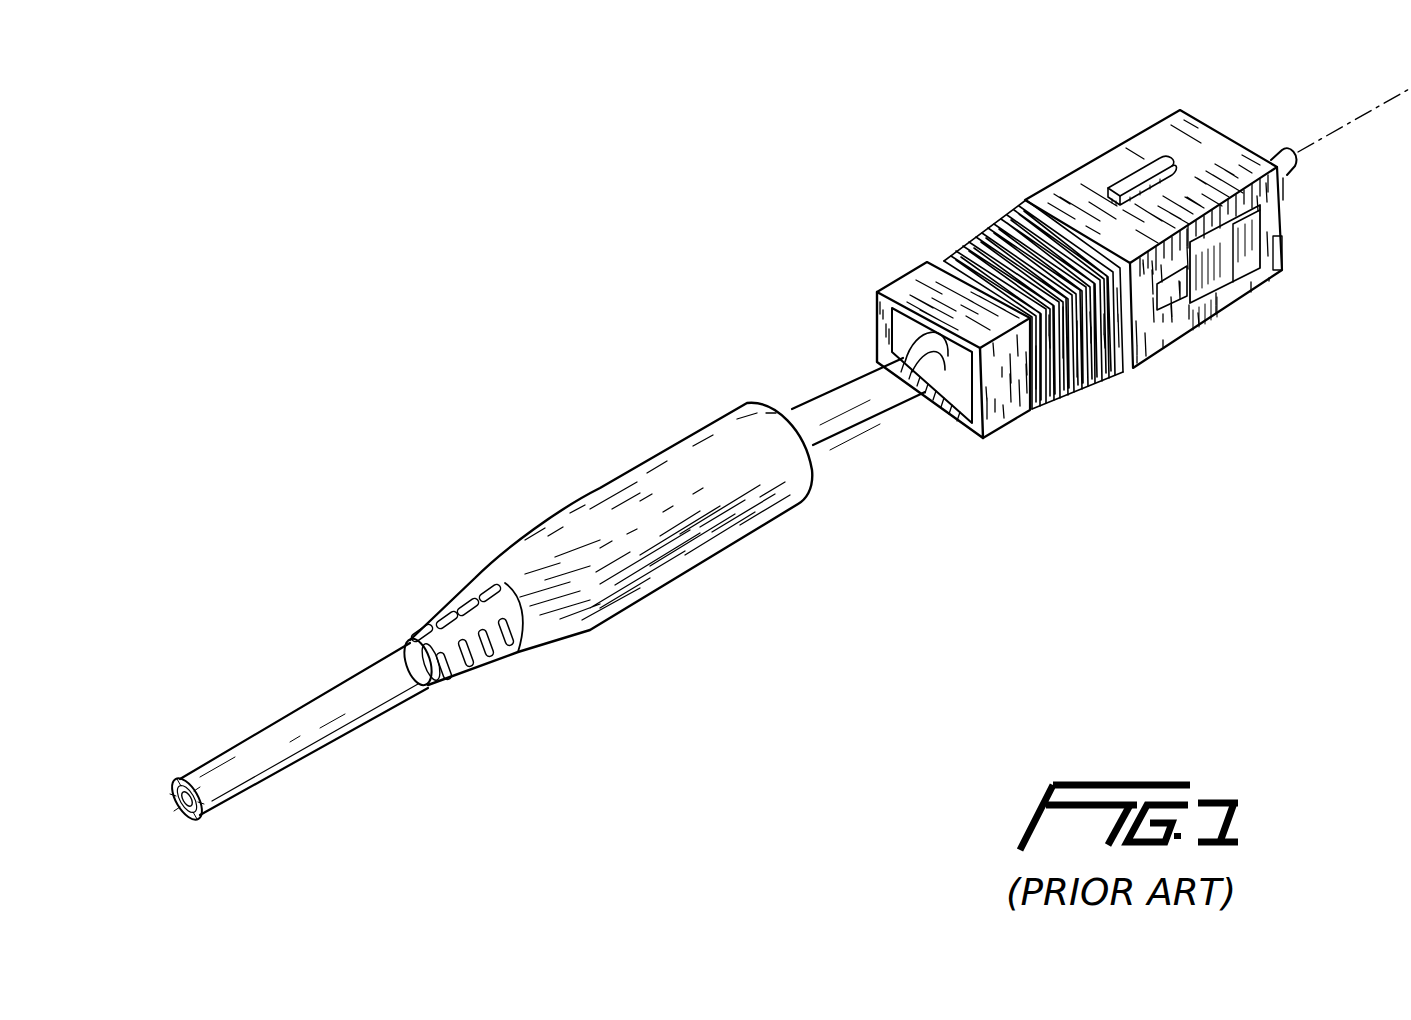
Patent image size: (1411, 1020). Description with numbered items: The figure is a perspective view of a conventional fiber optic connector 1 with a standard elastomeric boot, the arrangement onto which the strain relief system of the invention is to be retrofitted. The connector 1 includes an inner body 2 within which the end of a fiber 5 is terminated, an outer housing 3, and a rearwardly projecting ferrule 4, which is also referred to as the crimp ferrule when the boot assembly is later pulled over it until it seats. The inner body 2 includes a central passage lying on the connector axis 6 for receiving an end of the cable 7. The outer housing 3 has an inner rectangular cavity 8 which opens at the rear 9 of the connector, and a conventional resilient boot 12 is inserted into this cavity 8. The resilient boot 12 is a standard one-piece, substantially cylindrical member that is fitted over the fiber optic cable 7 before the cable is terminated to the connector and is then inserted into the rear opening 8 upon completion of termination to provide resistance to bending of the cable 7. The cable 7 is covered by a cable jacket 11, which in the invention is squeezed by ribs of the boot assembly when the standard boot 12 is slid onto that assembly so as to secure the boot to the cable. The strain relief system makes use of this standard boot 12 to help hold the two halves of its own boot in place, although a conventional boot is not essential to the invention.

The fiber optic connector 1 is at (943, 171).
The inner body 2 is at (1210, 263).
The outer housing 3 is at (1077, 194).
The ferrule 4 is at (935, 357).
The fiber 5 is at (175, 797).
The connector axis 6 is at (1352, 117).
The cable 7 is at (367, 705).
The inner rectangular cavity 8 is at (873, 338).
The rear 9 is at (955, 424).
The cable jacket 11 is at (198, 818).
The resilient boot 12 is at (610, 497).